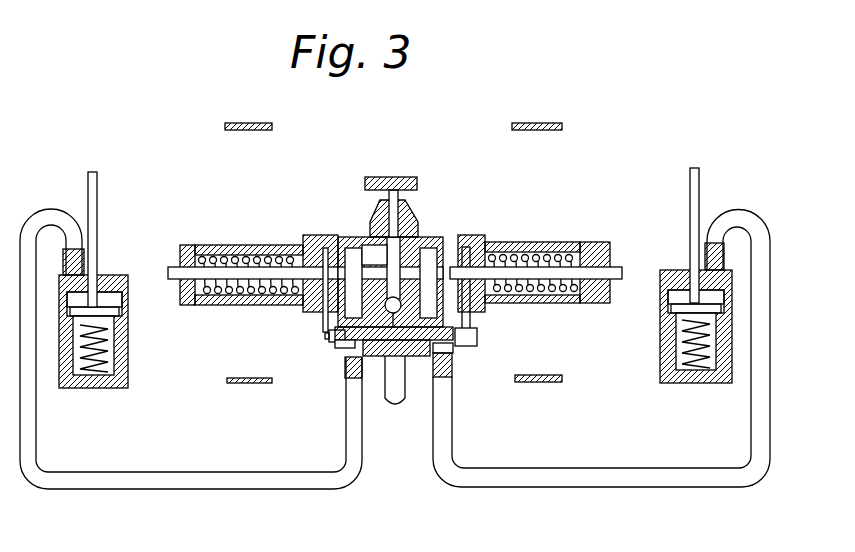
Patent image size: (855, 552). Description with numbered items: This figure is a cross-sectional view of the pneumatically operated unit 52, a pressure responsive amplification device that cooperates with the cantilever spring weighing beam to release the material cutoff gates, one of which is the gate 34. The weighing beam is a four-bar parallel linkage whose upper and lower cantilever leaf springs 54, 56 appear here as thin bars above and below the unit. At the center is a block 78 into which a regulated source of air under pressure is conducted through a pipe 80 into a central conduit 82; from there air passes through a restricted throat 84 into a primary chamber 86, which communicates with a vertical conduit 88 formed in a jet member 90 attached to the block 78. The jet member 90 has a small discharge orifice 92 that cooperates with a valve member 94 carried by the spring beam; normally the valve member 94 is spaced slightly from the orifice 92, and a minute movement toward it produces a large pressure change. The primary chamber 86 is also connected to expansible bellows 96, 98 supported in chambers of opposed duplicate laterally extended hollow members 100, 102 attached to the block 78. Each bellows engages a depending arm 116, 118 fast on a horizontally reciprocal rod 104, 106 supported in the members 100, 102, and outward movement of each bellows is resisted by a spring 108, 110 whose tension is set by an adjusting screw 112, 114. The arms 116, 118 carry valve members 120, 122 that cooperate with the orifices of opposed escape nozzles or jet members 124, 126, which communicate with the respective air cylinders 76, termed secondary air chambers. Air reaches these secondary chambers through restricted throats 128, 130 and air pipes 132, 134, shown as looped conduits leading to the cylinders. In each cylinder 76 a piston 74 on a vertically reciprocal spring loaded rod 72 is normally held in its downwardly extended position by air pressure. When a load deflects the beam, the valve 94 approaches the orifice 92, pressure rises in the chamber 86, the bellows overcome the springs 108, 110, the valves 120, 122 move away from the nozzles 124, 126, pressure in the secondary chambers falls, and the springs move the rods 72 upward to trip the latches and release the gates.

The material cutoff gate 34 is at (540, 123).
The pneumatically operated unit 52 is at (527, 176).
The upper cantilever leaf spring 54 is at (252, 123).
The lower cantilever leaf spring 56 is at (252, 383).
The spring loaded rod 72 is at (97, 202).
The piston 74 is at (122, 306).
The air cylinder 76 is at (128, 358).
The block 78 is at (420, 240).
The pipe 80 is at (395, 404).
The central conduit 82 is at (402, 307).
The restricted throat 84 is at (329, 336).
The primary chamber 86 is at (372, 258).
The vertical conduit 88 is at (410, 214).
The jet member 90 is at (370, 237).
The discharge orifice 92 is at (400, 191).
The valve member 94 is at (396, 177).
The expansible bellows 96 is at (325, 248).
The expansible bellows 98 is at (466, 262).
The hollow member 100 is at (268, 245).
The hollow member 102 is at (540, 242).
The horizontally reciprocal rod 104 is at (245, 280).
The horizontally reciprocal rod 106 is at (555, 280).
The spring 108 is at (220, 258).
The spring 110 is at (548, 256).
The adjusting screw 112 is at (180, 260).
The adjusting screw 114 is at (610, 246).
The depending arm 116 is at (320, 300).
The depending arm 118 is at (472, 302).
The valve member 120 is at (335, 346).
The valve member 122 is at (452, 334).
The jet member 124 is at (350, 352).
The jet member 126 is at (455, 352).
The restricted throat 128 is at (345, 372).
The restricted throat 130 is at (450, 370).
The air pipe 132 is at (228, 472).
The air pipe 134 is at (545, 468).